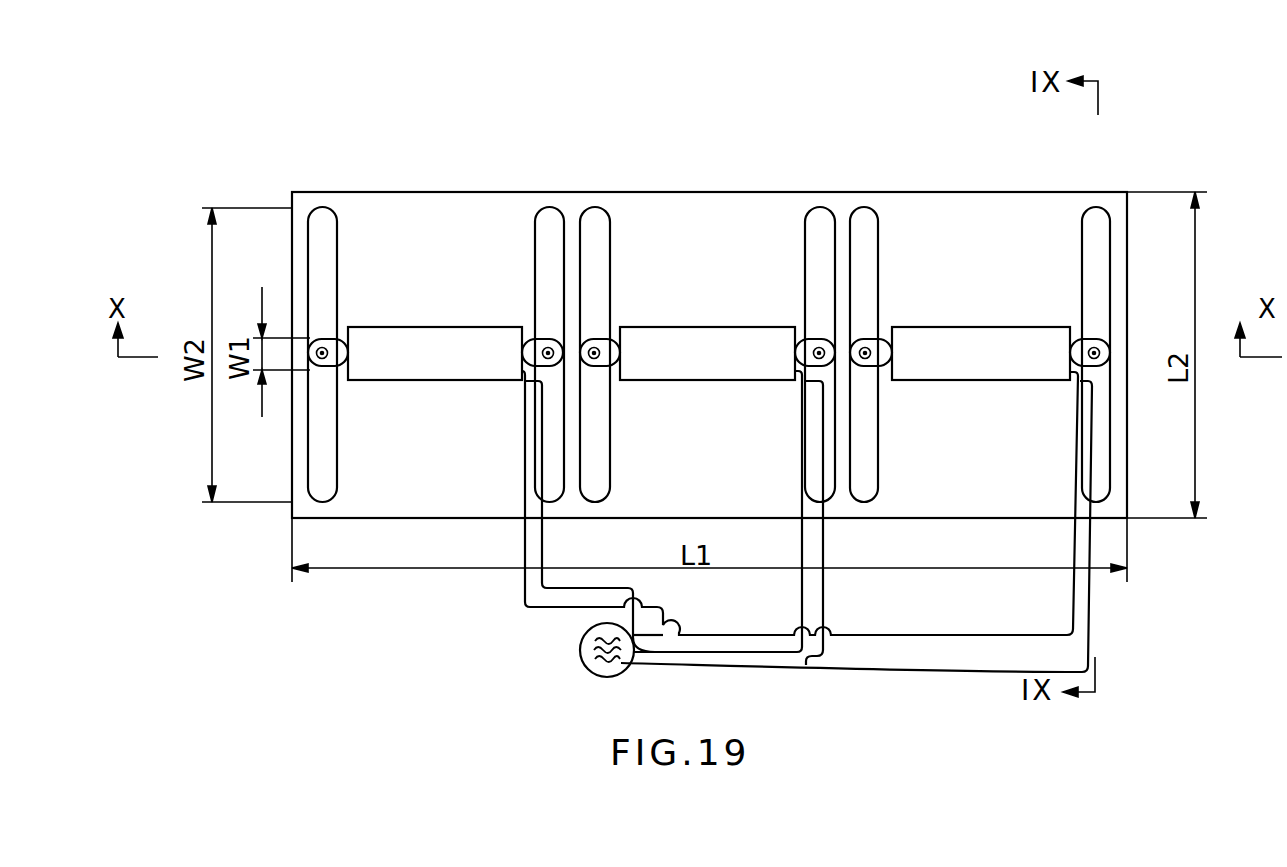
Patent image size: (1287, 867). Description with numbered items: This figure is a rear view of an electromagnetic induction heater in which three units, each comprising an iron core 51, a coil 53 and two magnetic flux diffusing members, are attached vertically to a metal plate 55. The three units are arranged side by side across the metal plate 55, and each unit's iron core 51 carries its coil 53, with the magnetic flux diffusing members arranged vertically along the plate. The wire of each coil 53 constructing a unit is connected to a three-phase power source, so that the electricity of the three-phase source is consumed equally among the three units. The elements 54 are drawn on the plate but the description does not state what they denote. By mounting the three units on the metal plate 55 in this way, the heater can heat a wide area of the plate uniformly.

The iron core 51 is at (333, 337).
The coil 53 is at (443, 340).
The slot 54 is at (320, 268).
The metal plate 55 is at (983, 225).